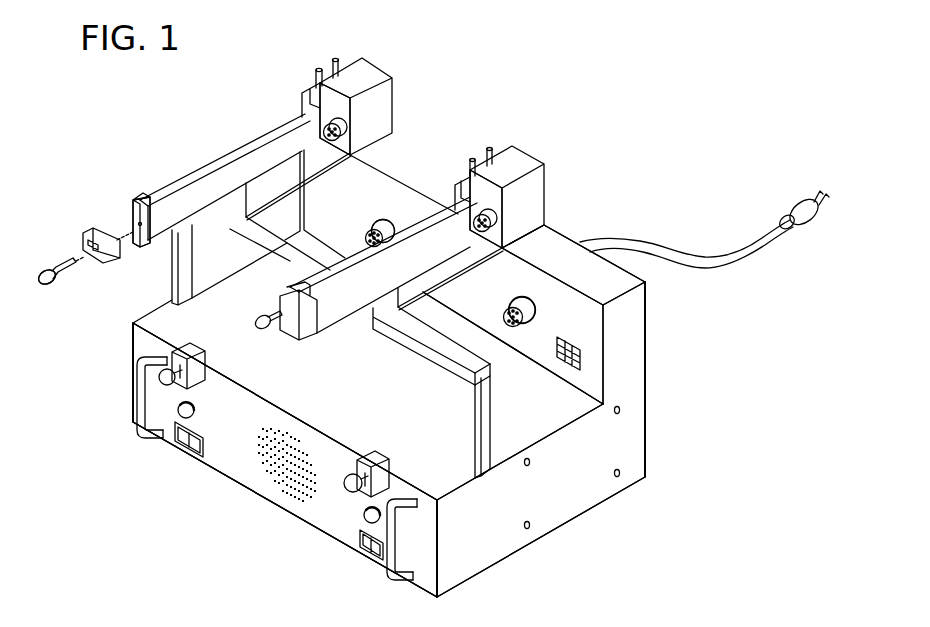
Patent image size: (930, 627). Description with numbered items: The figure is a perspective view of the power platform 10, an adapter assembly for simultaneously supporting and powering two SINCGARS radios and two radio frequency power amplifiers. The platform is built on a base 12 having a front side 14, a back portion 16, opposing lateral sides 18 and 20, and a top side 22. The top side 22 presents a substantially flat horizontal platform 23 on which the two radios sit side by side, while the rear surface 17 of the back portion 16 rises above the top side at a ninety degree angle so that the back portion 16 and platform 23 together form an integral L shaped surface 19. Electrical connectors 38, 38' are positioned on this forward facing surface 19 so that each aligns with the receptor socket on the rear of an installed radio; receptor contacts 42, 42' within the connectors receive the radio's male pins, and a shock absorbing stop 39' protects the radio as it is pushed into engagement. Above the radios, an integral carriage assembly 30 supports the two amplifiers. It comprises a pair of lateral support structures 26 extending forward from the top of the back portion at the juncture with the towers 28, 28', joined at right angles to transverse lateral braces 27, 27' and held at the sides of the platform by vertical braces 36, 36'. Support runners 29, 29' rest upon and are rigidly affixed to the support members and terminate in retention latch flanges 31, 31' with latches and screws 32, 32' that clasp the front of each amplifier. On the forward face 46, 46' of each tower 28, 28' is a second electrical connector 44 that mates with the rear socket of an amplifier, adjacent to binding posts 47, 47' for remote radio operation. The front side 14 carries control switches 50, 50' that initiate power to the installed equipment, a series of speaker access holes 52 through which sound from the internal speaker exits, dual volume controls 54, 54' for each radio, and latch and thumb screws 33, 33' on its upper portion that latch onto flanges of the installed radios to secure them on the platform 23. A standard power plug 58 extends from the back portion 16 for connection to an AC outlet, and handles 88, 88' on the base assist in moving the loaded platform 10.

The power platform 10 is at (500, 97).
The base 12 is at (555, 538).
The front side 14 is at (223, 463).
The back portion 16 is at (654, 418).
The rear surface 17 is at (647, 307).
The lateral side 18 is at (583, 492).
The L shaped surface 19 is at (585, 325).
The lateral side 20 is at (152, 316).
The top side 22 is at (575, 407).
The horizontal platform 23 is at (168, 333).
The lateral support structure 26 is at (258, 192).
The lateral brace 27 is at (280, 260).
The lateral brace 27' is at (431, 351).
The tower 28 is at (372, 98).
The tower 28' is at (527, 190).
The support runner 29 is at (225, 177).
The support runner 29' is at (383, 267).
The carriage assembly 30 is at (172, 182).
The retention latch flange 31 is at (114, 199).
The retention latch flange 31' is at (292, 335).
The latch and screw 32 is at (83, 225).
The latch and screw 32' is at (243, 337).
The latch and thumb screw 33 is at (138, 366).
The latch and thumb screw 33' is at (310, 503).
The vertical brace 36 is at (160, 265).
The vertical brace 36' is at (454, 421).
The electrical connector 38 is at (407, 182).
The electrical connector 38' is at (561, 266).
The shock absorbing stop 39' is at (625, 366).
The receptor contacts 42 is at (354, 226).
The plug connector 42' is at (491, 306).
The second electrical connector 44 is at (325, 131).
The forward face 46 is at (373, 119).
The block face 46' is at (529, 207).
The binding posts for remote radio operation 47 is at (287, 73).
The alignment pins 47' is at (467, 140).
The control switch 50 is at (173, 458).
The power switch 50' is at (355, 563).
The speaker access holes 52 is at (270, 482).
The volume control 54 is at (140, 415).
The volume control 54' is at (333, 540).
The power plug 58 is at (790, 205).
The handle 88 is at (127, 416).
The handle 88' is at (410, 563).